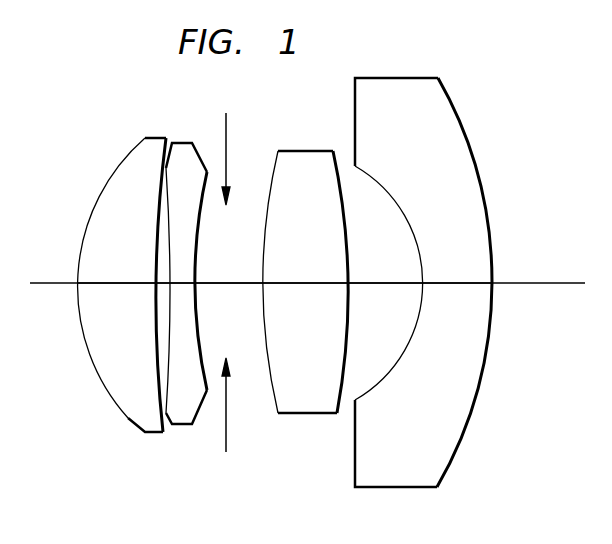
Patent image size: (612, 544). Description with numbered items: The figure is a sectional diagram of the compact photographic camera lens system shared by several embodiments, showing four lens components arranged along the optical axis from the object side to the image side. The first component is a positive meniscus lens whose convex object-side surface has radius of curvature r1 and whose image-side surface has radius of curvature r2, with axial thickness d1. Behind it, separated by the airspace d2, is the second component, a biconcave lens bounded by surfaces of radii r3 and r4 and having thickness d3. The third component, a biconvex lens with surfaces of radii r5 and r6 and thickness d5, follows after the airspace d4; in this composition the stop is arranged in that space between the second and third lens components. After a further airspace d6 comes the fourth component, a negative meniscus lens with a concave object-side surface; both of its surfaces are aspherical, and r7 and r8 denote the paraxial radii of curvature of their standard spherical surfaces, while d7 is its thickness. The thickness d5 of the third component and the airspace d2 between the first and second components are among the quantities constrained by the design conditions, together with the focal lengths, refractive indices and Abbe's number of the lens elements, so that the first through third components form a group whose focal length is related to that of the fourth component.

The radius of curvature of first lens component object-side surface r1 is at (128, 418).
The radius of curvature of first lens component image-side surface r2 is at (163, 430).
The radius of curvature of second lens component object-side surface r3 is at (167, 395).
The radius of curvature of second lens component image-side surface r4 is at (206, 385).
The radius of curvature of third lens component object-side surface r5 is at (278, 413).
The radius of curvature of third lens component image-side surface r6 is at (337, 413).
The radius of curvature of fourth lens component object-side aspherical surface r7 is at (368, 405).
The radius of curvature of fourth lens component image-side aspherical surface r8 is at (460, 448).
The thickness of first lens component d1 is at (107, 283).
The airspace between first and second lens components d2 is at (157, 281).
The thickness of second lens component d3 is at (181, 283).
The airspace between second and third lens components d4 is at (228, 283).
The thickness of third lens component d5 is at (301, 283).
The airspace between third and fourth lens components d6 is at (378, 283).
The thickness of fourth lens component d7 is at (452, 283).